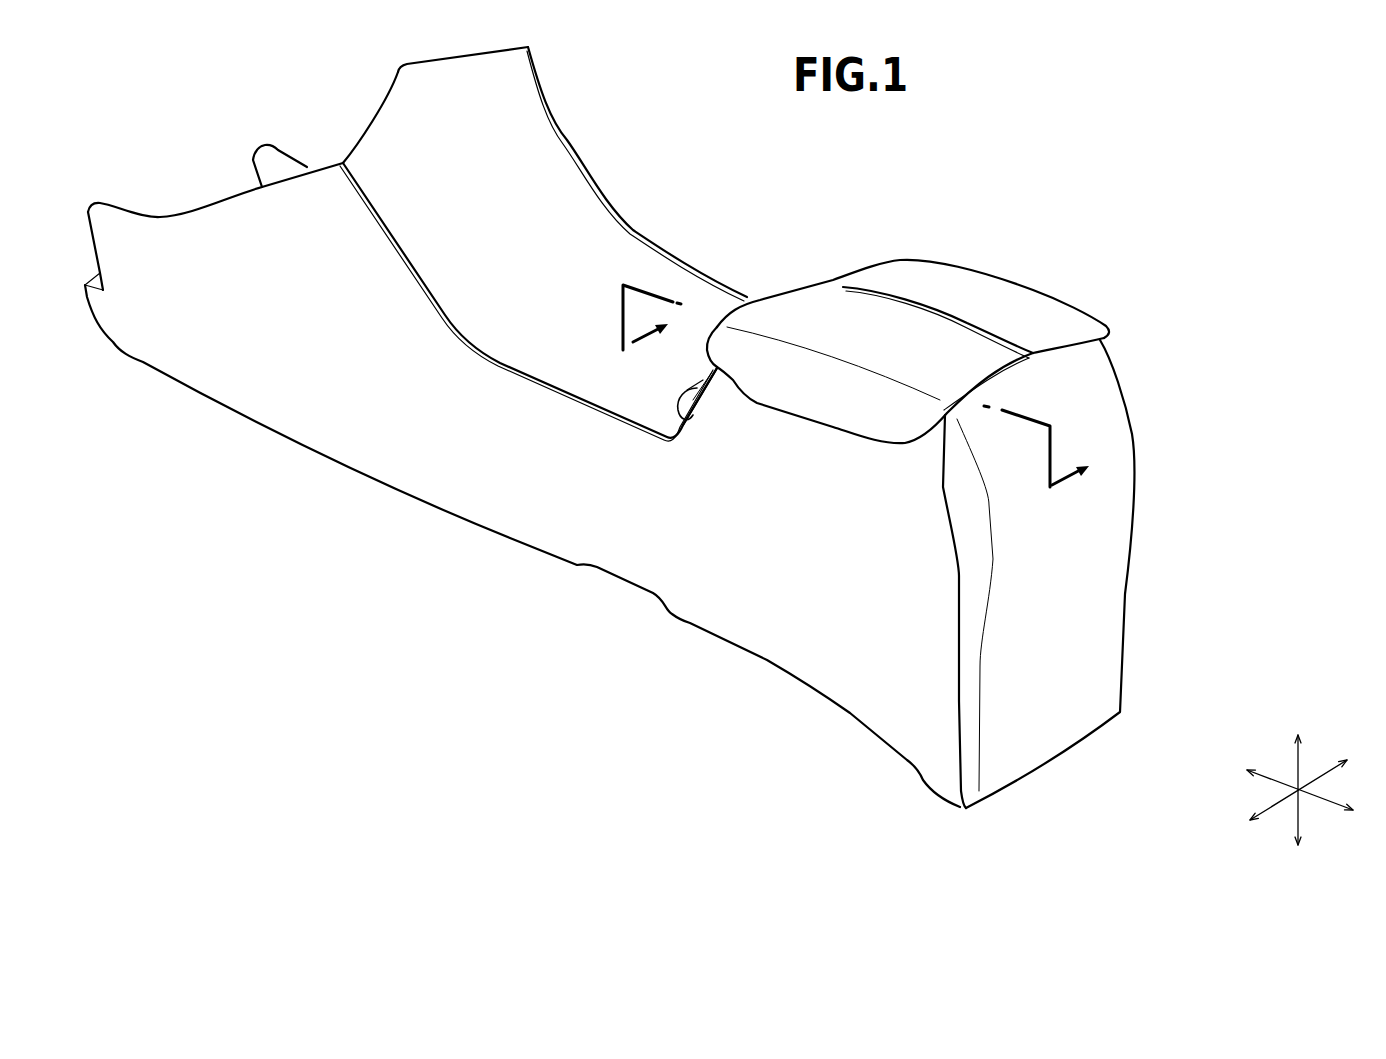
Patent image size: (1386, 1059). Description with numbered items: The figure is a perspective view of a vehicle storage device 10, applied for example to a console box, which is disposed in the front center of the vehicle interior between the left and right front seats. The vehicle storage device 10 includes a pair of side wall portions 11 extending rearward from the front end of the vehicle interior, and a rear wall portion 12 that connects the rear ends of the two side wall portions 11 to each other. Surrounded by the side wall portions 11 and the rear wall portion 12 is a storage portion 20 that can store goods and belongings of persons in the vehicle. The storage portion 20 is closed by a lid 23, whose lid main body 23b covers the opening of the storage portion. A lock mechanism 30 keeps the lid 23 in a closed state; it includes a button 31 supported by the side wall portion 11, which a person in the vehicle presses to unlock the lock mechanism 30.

The vehicle storage device 10 is at (1100, 120).
The side wall portion 11 is at (618, 213).
The rear wall portion 12 is at (1068, 598).
The storage portion 20 is at (917, 324).
The lid 23 is at (937, 307).
The lid main body 23b is at (943, 283).
The lock mechanism 30 is at (680, 380).
The button 31 is at (683, 417).